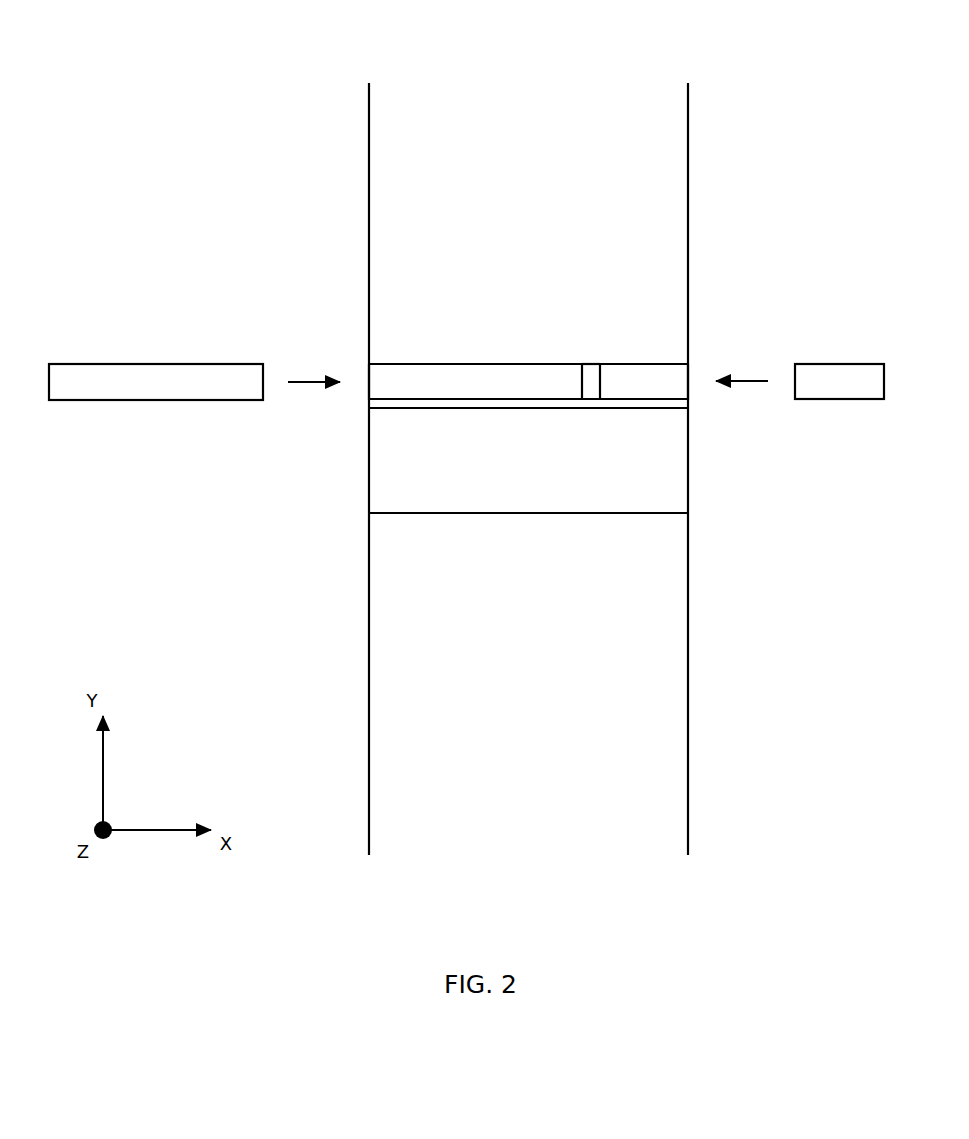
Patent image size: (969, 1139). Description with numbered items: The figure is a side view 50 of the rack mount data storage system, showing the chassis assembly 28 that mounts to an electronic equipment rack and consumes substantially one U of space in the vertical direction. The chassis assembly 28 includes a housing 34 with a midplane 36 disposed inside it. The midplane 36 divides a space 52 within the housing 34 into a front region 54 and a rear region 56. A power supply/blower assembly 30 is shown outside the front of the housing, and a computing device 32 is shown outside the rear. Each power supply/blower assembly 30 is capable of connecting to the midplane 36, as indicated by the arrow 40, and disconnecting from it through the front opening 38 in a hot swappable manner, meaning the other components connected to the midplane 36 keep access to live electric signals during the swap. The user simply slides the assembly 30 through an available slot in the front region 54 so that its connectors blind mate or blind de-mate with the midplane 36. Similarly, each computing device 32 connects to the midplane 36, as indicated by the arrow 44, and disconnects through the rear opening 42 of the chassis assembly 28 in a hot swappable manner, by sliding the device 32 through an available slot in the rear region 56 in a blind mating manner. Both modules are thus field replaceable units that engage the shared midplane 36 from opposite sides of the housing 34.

The side view 50 is at (165, 62).
The chassis assembly 28 is at (315, 255).
The housing 34 is at (432, 365).
The midplane 36 is at (592, 366).
The rear region 56 is at (496, 365).
The space 52 is at (565, 362).
The front region 54 is at (634, 367).
The computing device 32 is at (140, 372).
The power supply/blower assembly 30 is at (840, 368).
The rear opening 42 is at (350, 360).
The front opening 38 is at (702, 362).
The arrow 44 is at (318, 384).
The arrow 40 is at (748, 383).